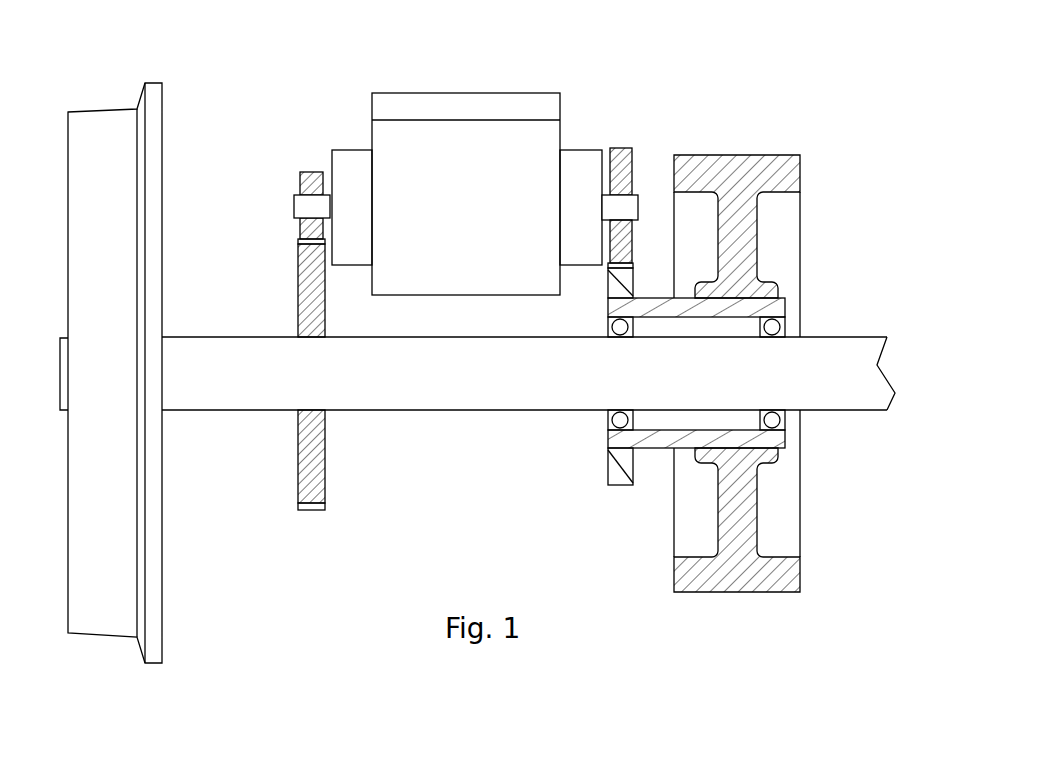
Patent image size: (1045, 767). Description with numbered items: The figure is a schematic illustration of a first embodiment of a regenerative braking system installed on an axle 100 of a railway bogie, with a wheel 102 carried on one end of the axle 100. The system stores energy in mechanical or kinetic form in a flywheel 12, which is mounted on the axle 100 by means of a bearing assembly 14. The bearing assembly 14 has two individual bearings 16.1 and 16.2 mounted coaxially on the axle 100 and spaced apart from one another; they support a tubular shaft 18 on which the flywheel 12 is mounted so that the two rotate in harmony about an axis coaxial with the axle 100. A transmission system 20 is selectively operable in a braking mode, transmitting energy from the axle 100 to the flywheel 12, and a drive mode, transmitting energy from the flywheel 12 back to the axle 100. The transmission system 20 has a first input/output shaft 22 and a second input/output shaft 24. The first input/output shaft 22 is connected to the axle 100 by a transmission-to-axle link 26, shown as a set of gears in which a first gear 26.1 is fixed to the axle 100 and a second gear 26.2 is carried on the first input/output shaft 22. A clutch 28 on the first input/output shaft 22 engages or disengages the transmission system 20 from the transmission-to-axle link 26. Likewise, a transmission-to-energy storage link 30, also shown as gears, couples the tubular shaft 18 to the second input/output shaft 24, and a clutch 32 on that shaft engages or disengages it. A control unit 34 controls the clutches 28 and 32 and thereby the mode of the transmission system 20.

The flywheel 12 is at (740, 493).
The bearing assembly 14 is at (801, 310).
The bearing 16.1 is at (785, 418).
The bearing 16.2 is at (608, 418).
The tubular shaft 18 is at (775, 440).
The transmission system 20 is at (527, 143).
The first input/output shaft 22 is at (305, 205).
The second input/output shaft 24 is at (628, 208).
The transmission-to-axle link 26 is at (280, 253).
The first gear 26.1 is at (310, 507).
The second gear 26.2 is at (312, 172).
The clutch 28 is at (357, 162).
The transmission-to-energy storage link 30 is at (658, 234).
The clutch 32 is at (575, 172).
The control unit 34 is at (418, 108).
The axle 100 is at (420, 397).
The wheel 102 is at (112, 598).